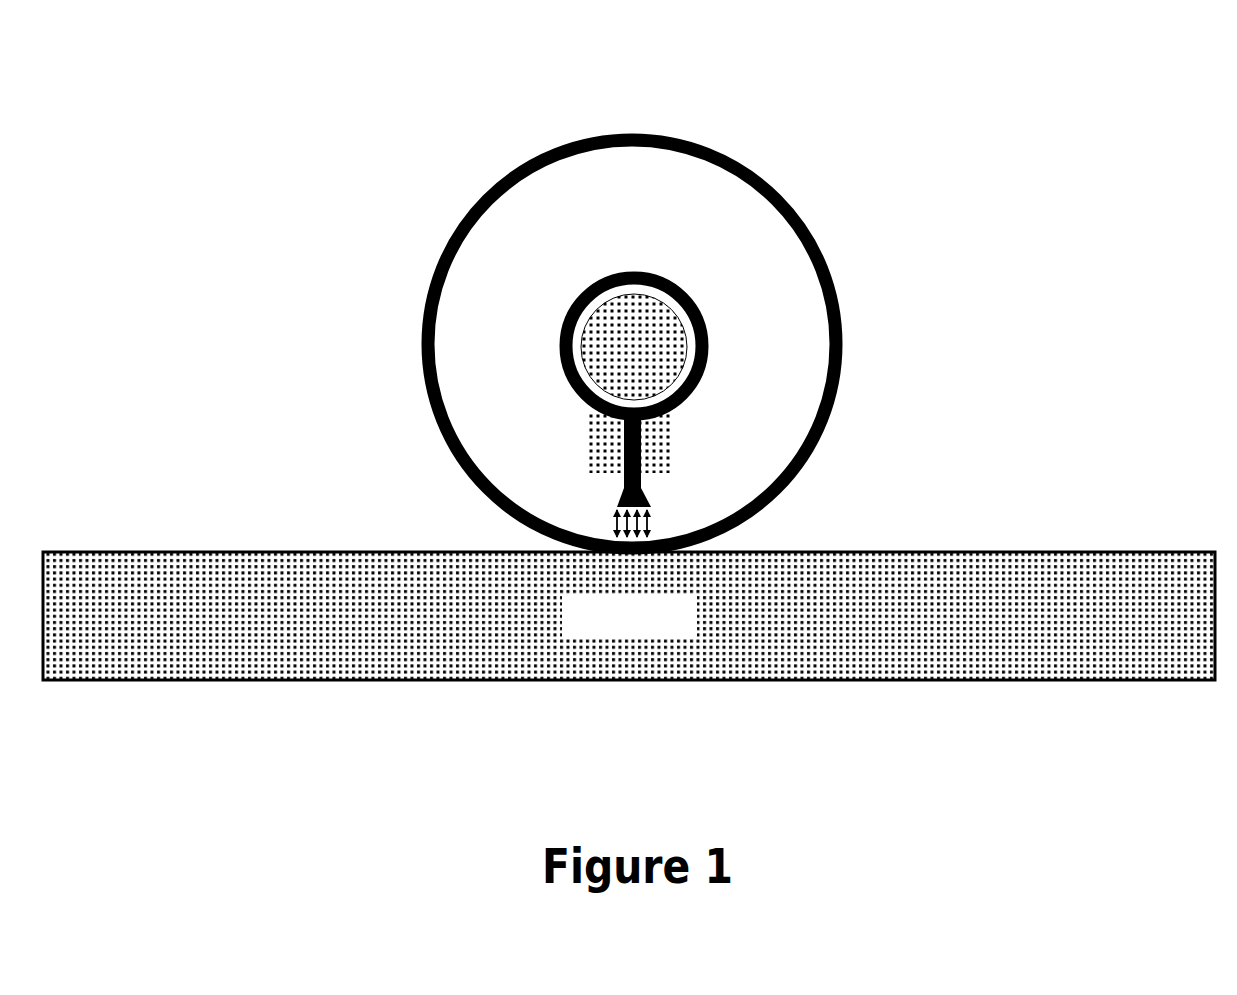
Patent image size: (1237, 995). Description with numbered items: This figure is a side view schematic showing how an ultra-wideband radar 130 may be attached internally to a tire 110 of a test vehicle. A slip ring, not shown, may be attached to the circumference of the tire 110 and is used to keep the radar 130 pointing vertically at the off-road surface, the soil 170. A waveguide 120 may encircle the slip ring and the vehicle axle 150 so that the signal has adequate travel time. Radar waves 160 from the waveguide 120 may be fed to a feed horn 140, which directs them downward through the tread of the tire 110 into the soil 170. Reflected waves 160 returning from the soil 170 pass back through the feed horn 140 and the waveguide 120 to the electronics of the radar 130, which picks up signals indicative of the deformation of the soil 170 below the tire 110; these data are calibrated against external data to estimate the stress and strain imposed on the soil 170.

The tire 110 is at (776, 146).
The waveguide 120 is at (745, 354).
The ultra-wideband radar 130 is at (711, 444).
The feed horn 140 is at (703, 500).
The vehicle axle 150 is at (547, 335).
The radar waves 160 is at (574, 523).
The soil 170 is at (629, 616).